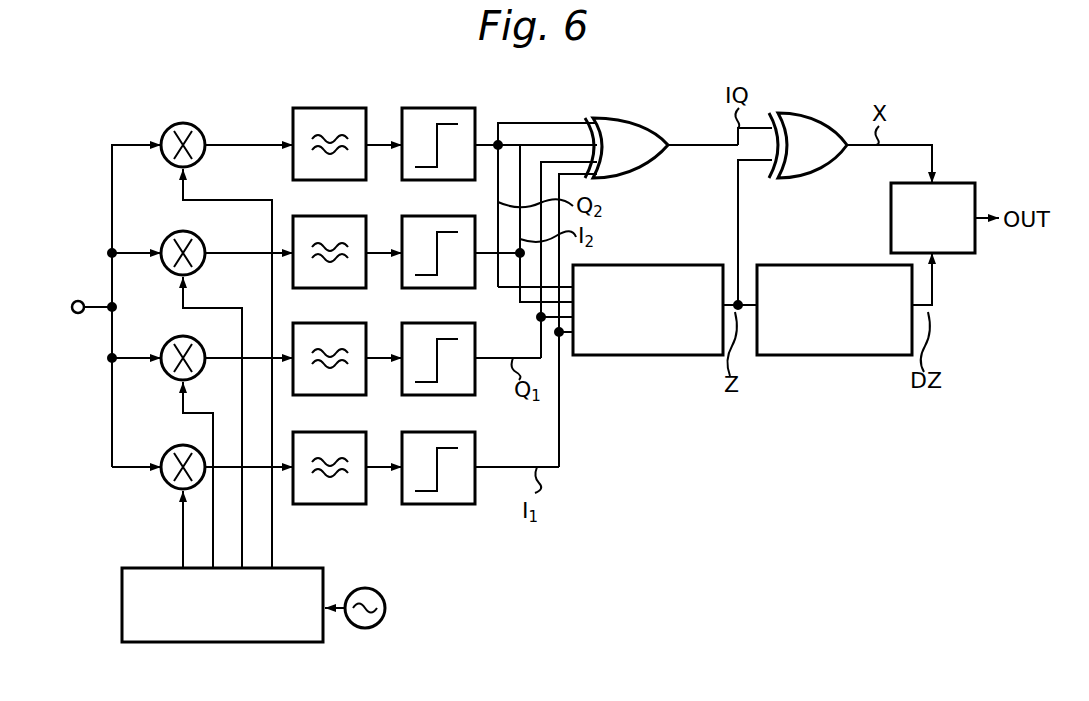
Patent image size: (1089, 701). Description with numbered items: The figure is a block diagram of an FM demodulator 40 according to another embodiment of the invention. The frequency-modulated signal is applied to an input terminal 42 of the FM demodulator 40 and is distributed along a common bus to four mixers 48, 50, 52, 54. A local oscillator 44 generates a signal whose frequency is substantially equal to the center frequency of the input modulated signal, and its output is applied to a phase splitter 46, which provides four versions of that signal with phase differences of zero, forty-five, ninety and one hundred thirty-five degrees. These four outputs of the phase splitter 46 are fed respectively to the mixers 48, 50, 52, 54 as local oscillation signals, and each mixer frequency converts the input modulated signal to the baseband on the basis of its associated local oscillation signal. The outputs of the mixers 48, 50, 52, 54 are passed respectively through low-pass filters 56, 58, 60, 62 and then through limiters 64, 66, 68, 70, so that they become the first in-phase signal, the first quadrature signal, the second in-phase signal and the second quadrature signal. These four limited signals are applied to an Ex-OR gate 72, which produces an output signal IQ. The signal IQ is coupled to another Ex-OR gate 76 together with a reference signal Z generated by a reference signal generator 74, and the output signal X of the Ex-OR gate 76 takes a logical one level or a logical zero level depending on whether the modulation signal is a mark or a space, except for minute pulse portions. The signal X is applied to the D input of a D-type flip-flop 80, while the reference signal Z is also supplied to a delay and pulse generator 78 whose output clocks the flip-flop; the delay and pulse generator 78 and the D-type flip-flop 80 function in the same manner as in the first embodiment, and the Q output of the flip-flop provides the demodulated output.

The FM demodulator 40 is at (97, 160).
The input terminal 42 is at (78, 301).
The local oscillator 44 is at (385, 605).
The phase splitter 46 is at (323, 569).
The mixer 48 is at (171, 484).
The mixer 50 is at (175, 382).
The mixer 52 is at (175, 272).
The mixer 54 is at (172, 164).
The low-pass filter 56 is at (324, 432).
The low-pass filter 58 is at (324, 323).
The low-pass filter 60 is at (326, 216).
The low-pass filter 62 is at (337, 108).
The limiter 64 is at (428, 432).
The limiter 66 is at (428, 323).
The limiter 68 is at (430, 216).
The limiter 70 is at (436, 108).
The Ex-OR gate 72 is at (617, 118).
The reference signal generator 74 is at (652, 355).
The Ex-OR gate 76 is at (800, 113).
The delay and pulse generator 78 is at (828, 355).
The D-type flip-flop 80 is at (958, 183).